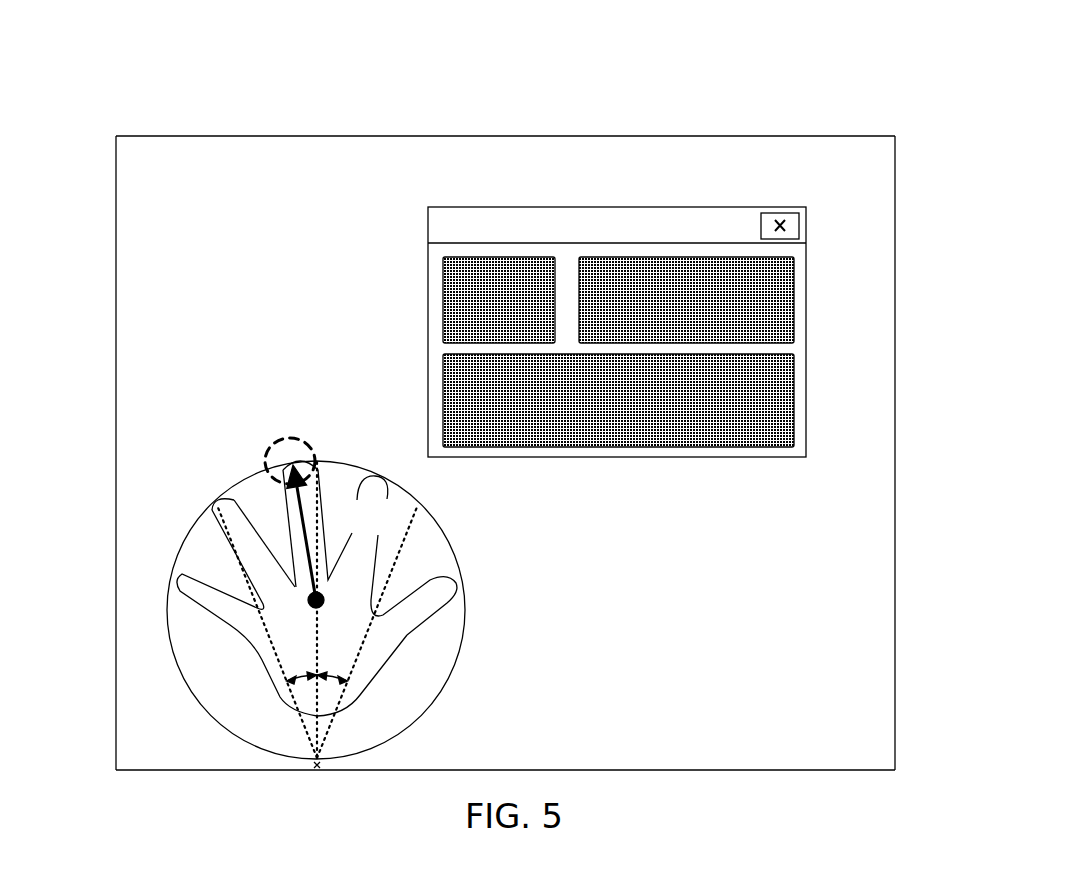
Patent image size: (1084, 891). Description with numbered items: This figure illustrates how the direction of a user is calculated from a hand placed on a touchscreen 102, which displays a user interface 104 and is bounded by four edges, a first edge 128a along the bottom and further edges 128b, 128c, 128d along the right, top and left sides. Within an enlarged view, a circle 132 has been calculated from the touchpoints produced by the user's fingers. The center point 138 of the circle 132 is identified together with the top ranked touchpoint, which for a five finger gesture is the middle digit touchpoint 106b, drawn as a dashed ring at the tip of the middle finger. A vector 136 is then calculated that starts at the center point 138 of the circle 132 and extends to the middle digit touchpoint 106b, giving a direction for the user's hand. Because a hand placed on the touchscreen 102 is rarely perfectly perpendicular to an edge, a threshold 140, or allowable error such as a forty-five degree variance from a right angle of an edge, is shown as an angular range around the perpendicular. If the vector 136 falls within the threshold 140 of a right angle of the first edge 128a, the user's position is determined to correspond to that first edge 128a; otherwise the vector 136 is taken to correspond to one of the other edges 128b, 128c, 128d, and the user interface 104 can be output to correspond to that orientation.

The touchscreen 102 is at (502, 450).
The user interface 104 is at (713, 236).
The middle digit touchpoint 106b is at (268, 465).
The first edge 128a is at (782, 841).
The edge 128b is at (895, 430).
The edge 128c is at (577, 81).
The edge 128d is at (79, 453).
The circle 132 is at (431, 705).
The vector 136 is at (322, 537).
The center point 138 is at (337, 638).
The threshold 140 is at (303, 677).